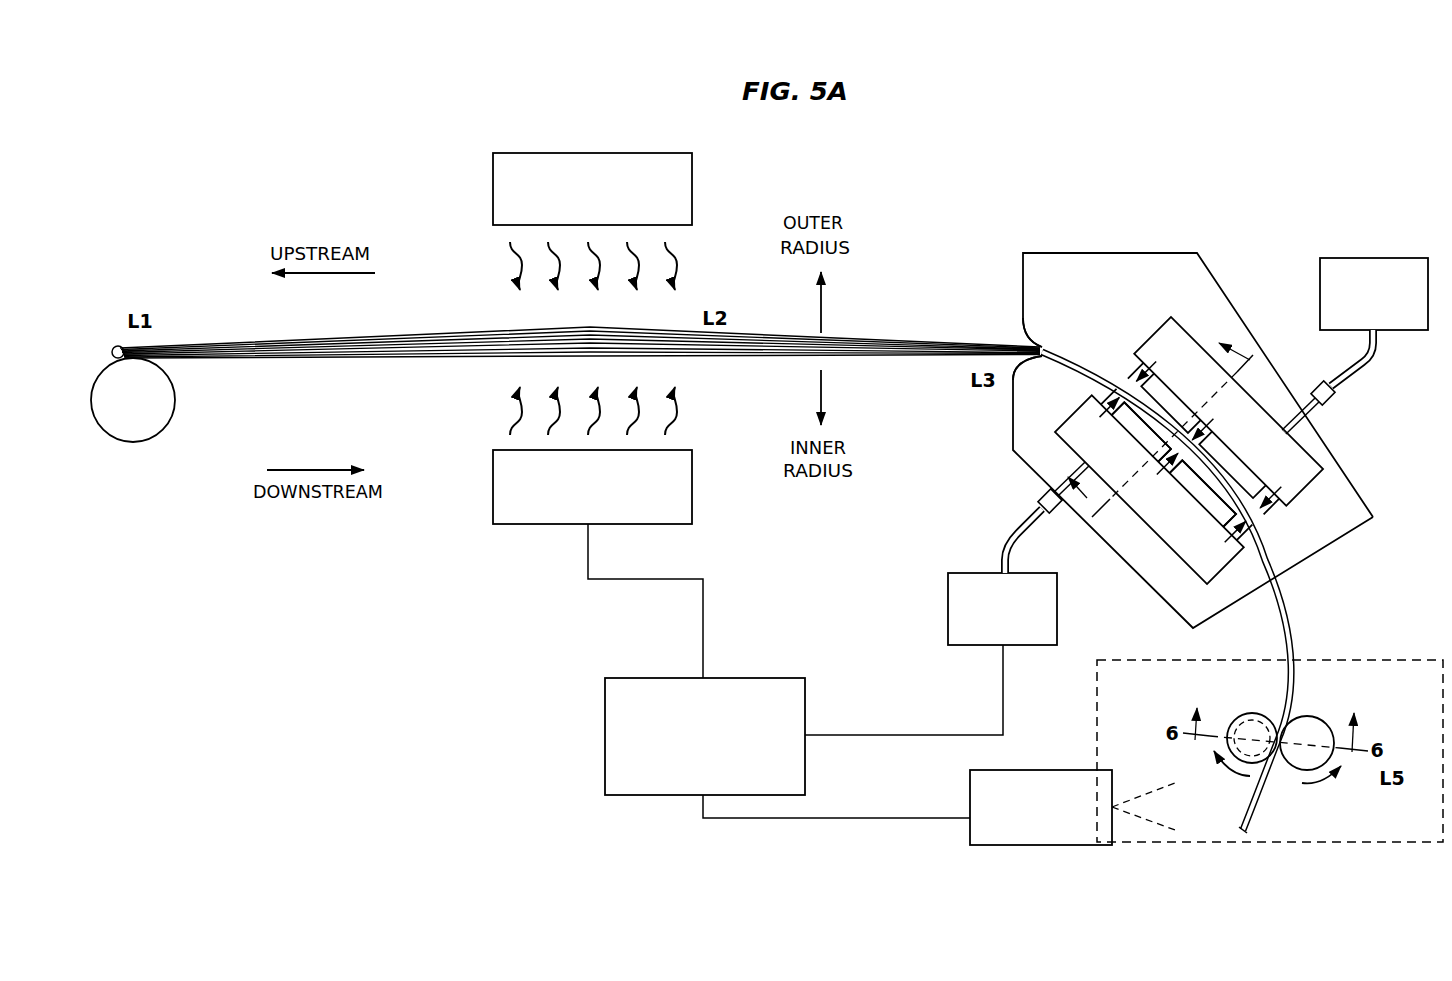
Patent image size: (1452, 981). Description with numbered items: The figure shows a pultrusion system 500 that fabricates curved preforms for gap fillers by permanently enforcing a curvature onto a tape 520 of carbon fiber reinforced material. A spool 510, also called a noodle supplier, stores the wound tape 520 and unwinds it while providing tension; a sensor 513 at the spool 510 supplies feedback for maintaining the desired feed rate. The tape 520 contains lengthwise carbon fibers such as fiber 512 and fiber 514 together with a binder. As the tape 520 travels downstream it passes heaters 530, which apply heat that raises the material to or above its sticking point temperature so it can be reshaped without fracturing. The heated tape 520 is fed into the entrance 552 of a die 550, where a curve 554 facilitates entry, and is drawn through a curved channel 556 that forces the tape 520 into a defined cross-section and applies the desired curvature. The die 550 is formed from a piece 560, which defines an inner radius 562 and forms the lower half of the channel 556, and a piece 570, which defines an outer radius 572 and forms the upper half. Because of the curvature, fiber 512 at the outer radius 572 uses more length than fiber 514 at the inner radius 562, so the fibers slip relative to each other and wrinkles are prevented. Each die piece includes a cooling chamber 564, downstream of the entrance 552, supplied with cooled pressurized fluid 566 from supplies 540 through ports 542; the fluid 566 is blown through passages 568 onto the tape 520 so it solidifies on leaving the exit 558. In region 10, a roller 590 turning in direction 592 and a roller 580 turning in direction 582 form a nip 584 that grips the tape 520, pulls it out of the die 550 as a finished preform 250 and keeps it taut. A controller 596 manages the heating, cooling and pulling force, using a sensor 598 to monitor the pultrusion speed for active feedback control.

The region 10 is at (1397, 658).
The preform 250 is at (1243, 834).
The pultrusion system 500 is at (333, 713).
The spool 510 is at (148, 443).
The fiber 512 is at (443, 335).
The sensor 513 is at (112, 347).
The fiber 514 is at (448, 372).
The tape 520 is at (580, 361).
The heaters 530 is at (579, 338).
The supplies 540 is at (1188, 451).
The ports 542 is at (1340, 386).
The die 550 is at (1189, 450).
The entrance 552 is at (1017, 330).
The curve 554 is at (1043, 340).
The channel 556 is at (1277, 533).
The exit 558 is at (1292, 578).
The piece 560 is at (1013, 424).
The inner radius 562 is at (1079, 372).
The cooling chamber 564 is at (1190, 590).
The pressurized fluid 566 is at (1236, 508).
The passages 568 is at (1125, 412).
The piece 570 is at (1213, 268).
The outer radius 572 is at (1093, 361).
The roller 580 is at (1310, 716).
The direction 582 is at (1330, 780).
The nip 584 is at (1281, 766).
The roller 590 is at (1256, 713).
The direction 592 is at (1228, 770).
The controller 596 is at (705, 736).
The sensor 598 is at (1072, 807).